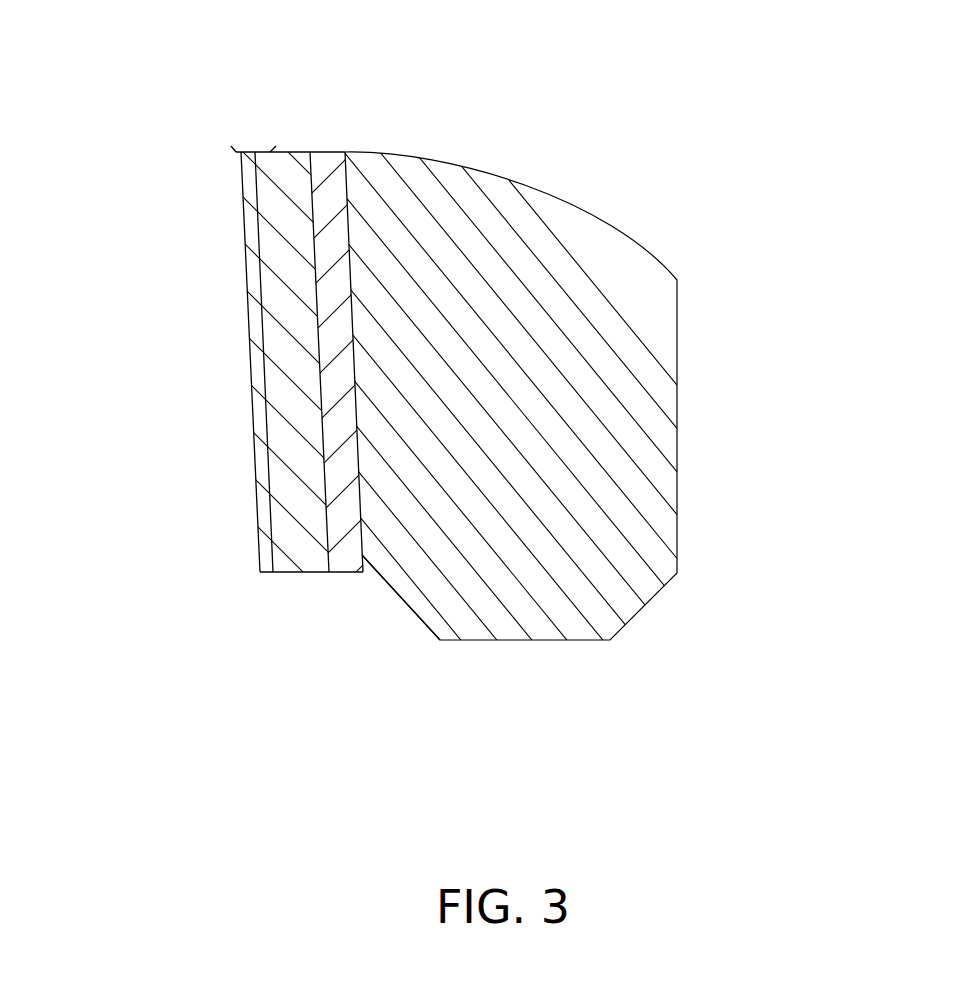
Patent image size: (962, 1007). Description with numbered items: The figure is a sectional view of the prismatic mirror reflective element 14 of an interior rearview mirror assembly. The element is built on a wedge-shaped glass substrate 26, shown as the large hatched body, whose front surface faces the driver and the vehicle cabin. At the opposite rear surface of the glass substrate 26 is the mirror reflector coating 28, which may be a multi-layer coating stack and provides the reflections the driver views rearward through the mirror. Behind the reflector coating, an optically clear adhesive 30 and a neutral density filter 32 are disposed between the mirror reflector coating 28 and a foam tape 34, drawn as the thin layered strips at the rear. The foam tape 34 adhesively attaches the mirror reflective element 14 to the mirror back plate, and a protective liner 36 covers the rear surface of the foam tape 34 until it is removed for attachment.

The prismatic mirror reflective element 14 is at (800, 122).
The wedge-shaped glass substrate 26 is at (555, 192).
The mirror reflector coating 28 is at (360, 555).
The optically clear adhesive 30 is at (353, 562).
The neutral density filter 32 is at (337, 555).
The foam tape 34 is at (273, 322).
The protective liner 36 is at (252, 347).